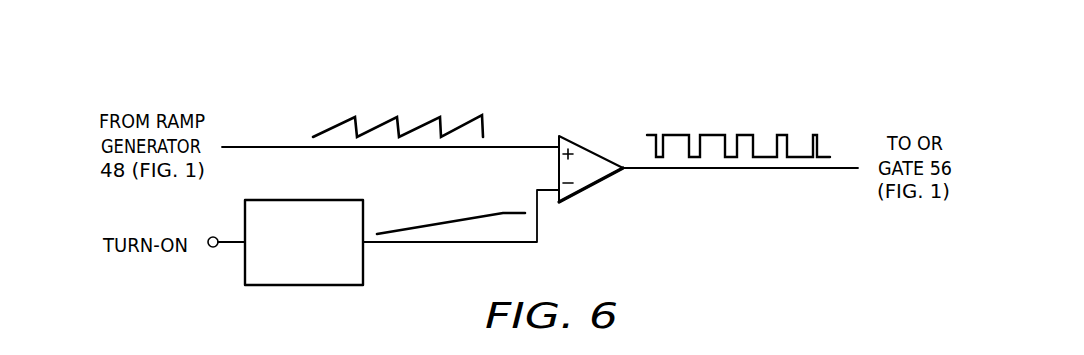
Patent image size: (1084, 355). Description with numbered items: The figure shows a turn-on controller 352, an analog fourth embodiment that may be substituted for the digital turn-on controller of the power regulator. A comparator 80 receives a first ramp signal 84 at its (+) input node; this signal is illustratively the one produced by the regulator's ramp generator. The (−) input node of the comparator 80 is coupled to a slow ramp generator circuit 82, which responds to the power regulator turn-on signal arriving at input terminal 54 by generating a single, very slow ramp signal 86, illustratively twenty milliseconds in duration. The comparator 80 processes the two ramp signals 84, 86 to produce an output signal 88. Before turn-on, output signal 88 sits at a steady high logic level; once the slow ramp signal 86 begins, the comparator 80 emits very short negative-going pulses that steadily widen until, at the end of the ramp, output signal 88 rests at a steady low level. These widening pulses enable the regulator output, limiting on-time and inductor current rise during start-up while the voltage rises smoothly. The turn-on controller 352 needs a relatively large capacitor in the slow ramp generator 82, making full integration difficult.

The turn-on controller 352 is at (646, 63).
The first ramp signal 84 is at (428, 118).
The comparator 80 is at (579, 143).
The output signal 88 is at (748, 133).
The input terminal 54 is at (213, 248).
The ramp generator circuit 82 is at (363, 267).
The slow ramp signal 86 is at (448, 223).